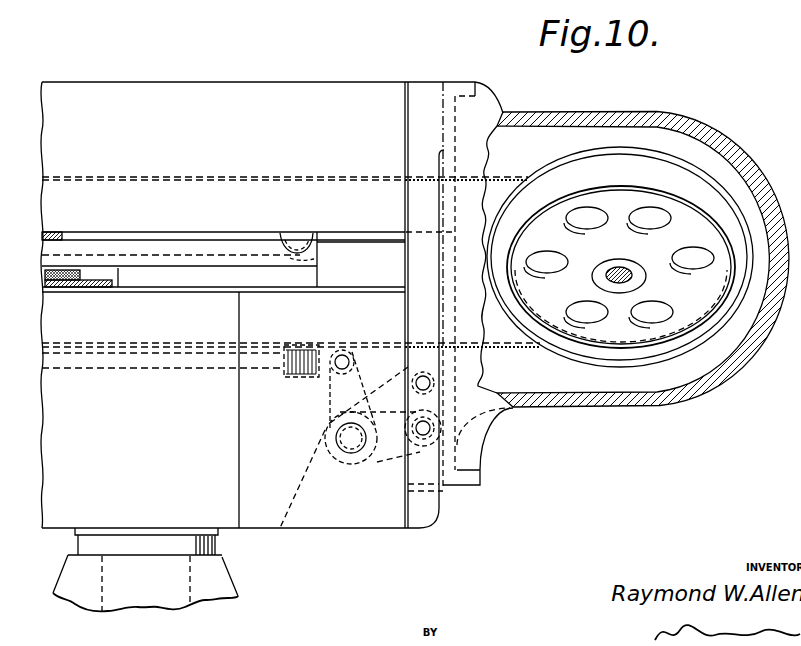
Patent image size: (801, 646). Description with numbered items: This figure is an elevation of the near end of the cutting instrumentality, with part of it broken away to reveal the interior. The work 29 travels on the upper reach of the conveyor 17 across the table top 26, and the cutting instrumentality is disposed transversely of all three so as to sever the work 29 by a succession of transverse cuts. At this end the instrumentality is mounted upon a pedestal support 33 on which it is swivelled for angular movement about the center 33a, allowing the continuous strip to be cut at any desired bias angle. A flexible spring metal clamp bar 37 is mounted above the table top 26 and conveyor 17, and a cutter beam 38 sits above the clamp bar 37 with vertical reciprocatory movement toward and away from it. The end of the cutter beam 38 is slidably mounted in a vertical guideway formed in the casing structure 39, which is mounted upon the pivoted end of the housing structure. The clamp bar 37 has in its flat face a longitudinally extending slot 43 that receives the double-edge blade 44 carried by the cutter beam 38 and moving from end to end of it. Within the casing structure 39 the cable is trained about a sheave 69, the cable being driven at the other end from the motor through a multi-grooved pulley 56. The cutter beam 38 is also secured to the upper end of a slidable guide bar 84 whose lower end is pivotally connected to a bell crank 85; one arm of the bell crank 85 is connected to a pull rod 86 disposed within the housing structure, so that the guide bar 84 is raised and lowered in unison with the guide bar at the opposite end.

The conveyor 17 is at (112, 285).
The table top 26 is at (80, 276).
The work 29 is at (53, 231).
The pedestal support 33 is at (237, 587).
The center 33a is at (203, 600).
The clamp bar 37 is at (172, 248).
The cutter beam 38 is at (362, 92).
The casing structure 39 is at (656, 114).
The slot 43 is at (314, 259).
The double-edge blade 44 is at (314, 238).
The multi-grooved pulley 56 is at (267, 520).
The sheave 69 is at (708, 325).
The slidable guide bar 84 is at (406, 310).
The bell crank 85 is at (328, 395).
The pull rod 86 is at (145, 368).